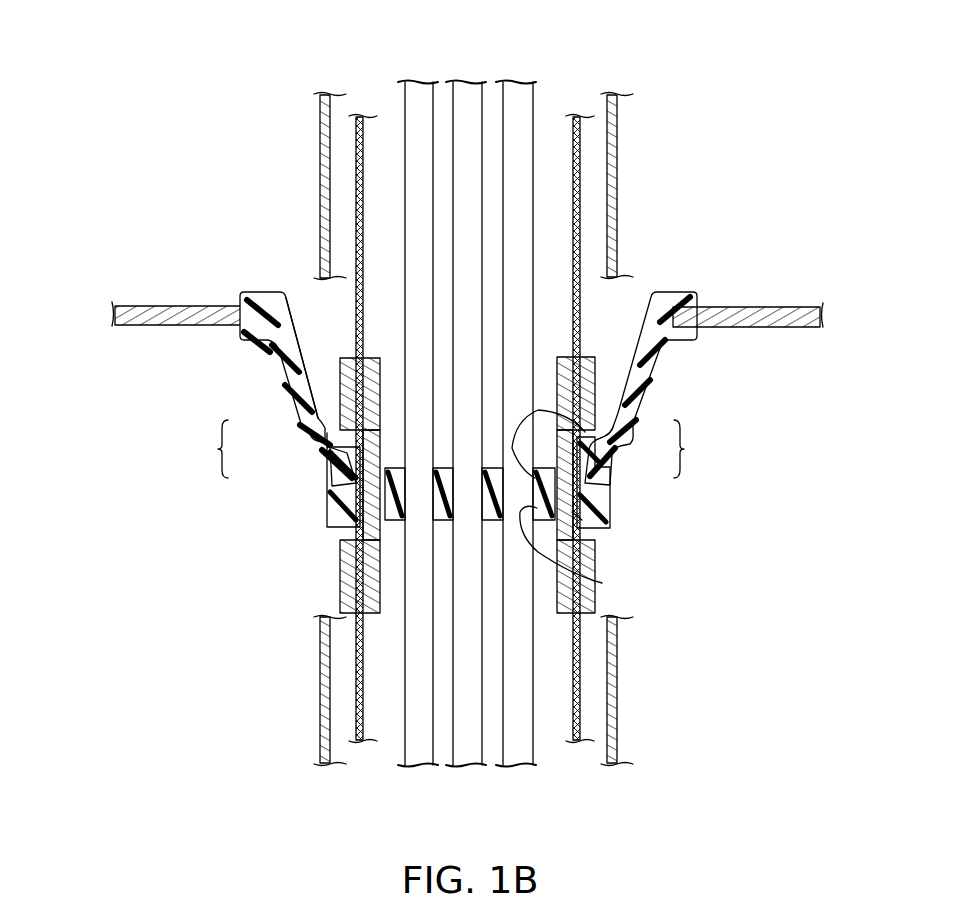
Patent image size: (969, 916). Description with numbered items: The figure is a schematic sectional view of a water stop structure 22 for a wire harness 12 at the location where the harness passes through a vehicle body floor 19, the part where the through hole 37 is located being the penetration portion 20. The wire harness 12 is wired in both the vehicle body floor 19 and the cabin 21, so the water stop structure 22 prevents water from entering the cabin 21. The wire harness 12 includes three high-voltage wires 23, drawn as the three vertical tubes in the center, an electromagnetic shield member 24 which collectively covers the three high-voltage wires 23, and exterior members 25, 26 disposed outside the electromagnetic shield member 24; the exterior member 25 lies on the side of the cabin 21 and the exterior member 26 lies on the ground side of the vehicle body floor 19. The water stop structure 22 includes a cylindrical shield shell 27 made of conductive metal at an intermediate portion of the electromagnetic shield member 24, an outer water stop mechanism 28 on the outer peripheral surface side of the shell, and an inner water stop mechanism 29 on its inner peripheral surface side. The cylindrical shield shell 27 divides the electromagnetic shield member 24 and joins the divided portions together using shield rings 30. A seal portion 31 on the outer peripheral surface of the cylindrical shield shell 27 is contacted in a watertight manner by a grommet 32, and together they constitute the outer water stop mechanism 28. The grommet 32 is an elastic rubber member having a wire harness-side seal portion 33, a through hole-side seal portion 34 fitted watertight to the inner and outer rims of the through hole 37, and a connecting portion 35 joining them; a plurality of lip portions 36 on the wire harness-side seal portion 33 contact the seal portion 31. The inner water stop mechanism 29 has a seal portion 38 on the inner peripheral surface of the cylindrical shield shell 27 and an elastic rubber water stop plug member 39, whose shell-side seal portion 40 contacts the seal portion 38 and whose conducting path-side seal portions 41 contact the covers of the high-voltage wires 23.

The wire harness 12 is at (637, 114).
The vehicle body floor 19 is at (172, 308).
The penetration portion 20 is at (128, 605).
The cabin 21 is at (746, 83).
The water stop structure 22 is at (270, 540).
The high-voltage wire 23 is at (420, 757).
The electromagnetic shield member 24 is at (577, 215).
The exterior member 25 is at (615, 165).
The exterior member 26 is at (617, 740).
The cylindrical shield shell 27 is at (563, 368).
The outer water stop mechanism 28 is at (277, 450).
The inner water stop mechanism 29 is at (634, 450).
The shield ring 30 is at (590, 383).
The seal portion 31 is at (335, 478).
The grommet 32 is at (292, 408).
The wire harness-side seal portion 33 is at (335, 508).
The through hole-side seal portion 34 is at (268, 296).
The connecting portion 35 is at (283, 373).
The lip portion 36 is at (358, 525).
The through hole 37 is at (668, 300).
The seal portion 38 is at (563, 462).
The water stop plug member 39 is at (613, 430).
The shell-side seal portion 40 is at (572, 512).
The conducting path-side seal portion 41 is at (574, 550).